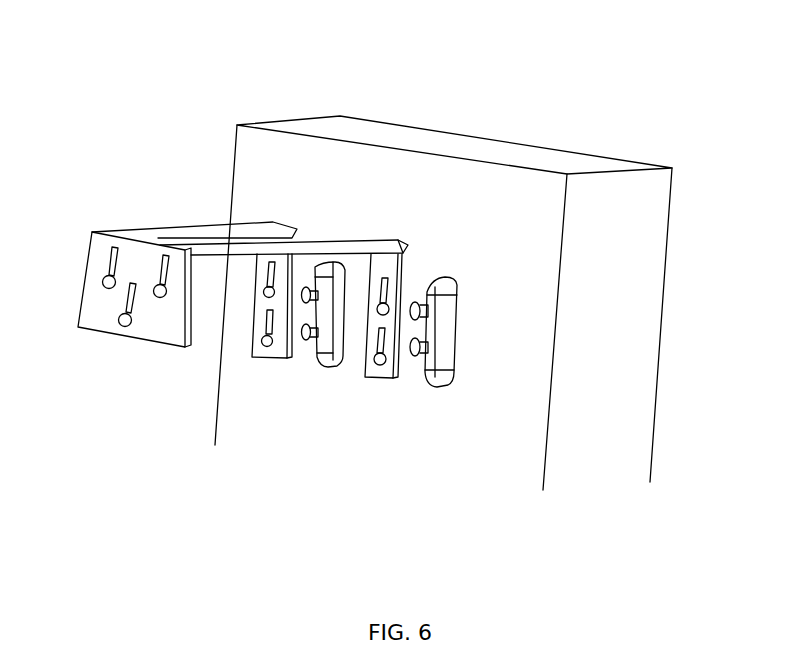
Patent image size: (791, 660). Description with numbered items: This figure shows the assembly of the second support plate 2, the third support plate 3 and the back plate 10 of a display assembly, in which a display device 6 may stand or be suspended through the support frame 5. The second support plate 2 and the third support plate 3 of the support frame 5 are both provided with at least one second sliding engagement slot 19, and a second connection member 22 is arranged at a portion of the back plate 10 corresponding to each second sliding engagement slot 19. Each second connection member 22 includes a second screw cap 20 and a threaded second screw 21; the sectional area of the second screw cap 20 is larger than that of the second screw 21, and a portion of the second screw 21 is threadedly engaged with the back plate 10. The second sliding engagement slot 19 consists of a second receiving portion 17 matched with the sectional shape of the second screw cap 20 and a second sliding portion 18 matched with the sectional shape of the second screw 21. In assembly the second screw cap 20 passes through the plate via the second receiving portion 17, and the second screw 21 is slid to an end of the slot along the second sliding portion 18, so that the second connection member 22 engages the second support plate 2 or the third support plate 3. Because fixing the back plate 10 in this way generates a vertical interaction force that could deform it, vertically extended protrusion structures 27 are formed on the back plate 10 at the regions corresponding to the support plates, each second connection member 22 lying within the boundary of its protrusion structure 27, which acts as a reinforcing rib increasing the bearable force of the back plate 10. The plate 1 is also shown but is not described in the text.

The mounting plate 1 is at (160, 327).
The second support plate 2 is at (265, 307).
The third support plate 3 is at (322, 382).
The support frame 5 is at (134, 222).
The display device 6 is at (646, 252).
The back plate 10 is at (570, 329).
The second receiving portion 17 is at (380, 338).
The second sliding portion 18 is at (417, 401).
The second sliding engagement slot 19 is at (379, 419).
The second screw cap 20 is at (419, 305).
The second screw 21 is at (426, 298).
The second connection member 22 is at (484, 203).
The protrusion structure 27 is at (445, 333).